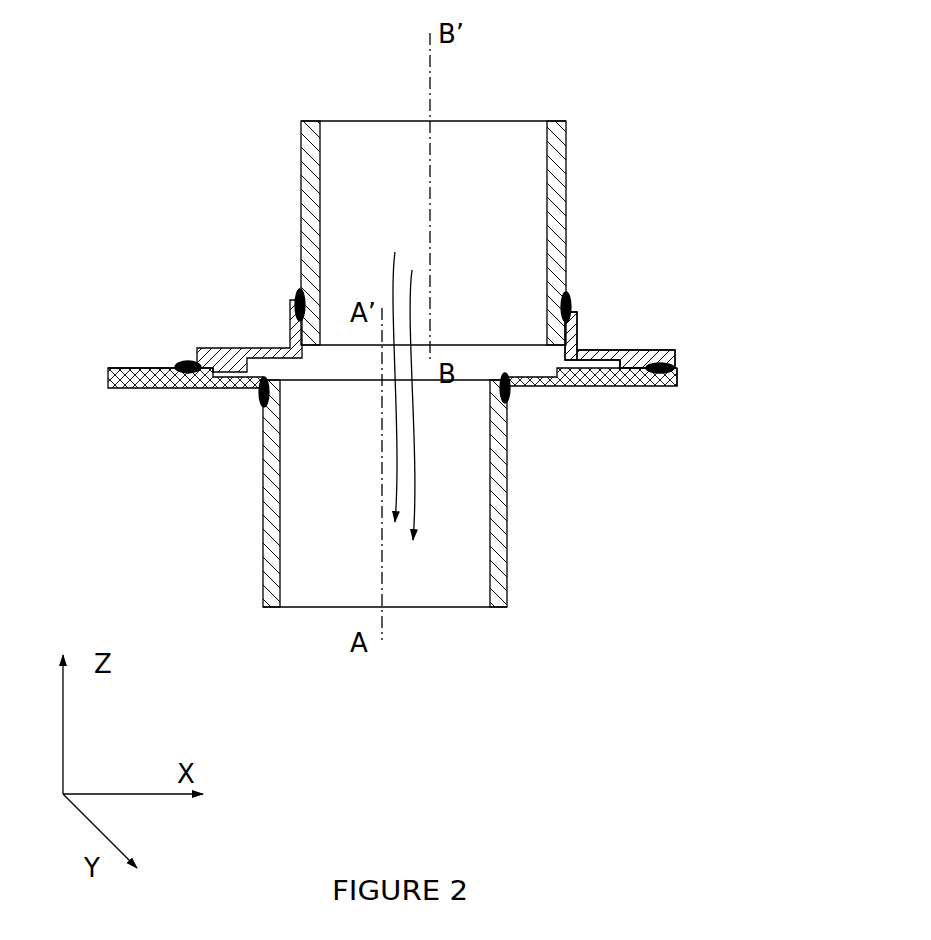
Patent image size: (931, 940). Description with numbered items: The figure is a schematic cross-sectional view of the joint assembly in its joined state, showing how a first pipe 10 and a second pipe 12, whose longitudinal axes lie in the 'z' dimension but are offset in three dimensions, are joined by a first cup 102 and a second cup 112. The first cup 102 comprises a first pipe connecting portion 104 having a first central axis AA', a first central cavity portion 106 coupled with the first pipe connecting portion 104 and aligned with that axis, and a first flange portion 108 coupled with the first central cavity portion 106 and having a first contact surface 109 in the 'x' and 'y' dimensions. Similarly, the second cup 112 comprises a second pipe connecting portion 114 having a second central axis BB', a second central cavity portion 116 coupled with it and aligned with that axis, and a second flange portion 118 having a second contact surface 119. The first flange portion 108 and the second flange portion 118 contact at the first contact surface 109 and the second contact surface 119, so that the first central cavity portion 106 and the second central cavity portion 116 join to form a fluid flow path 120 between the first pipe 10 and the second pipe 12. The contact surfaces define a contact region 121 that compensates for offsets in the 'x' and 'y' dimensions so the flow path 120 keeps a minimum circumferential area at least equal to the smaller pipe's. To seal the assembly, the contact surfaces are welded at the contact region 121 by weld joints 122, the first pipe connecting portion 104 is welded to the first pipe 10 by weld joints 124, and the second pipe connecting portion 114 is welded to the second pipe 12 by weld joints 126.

The first pipe 10 is at (264, 563).
The second pipe 12 is at (563, 133).
The first cup 102 is at (634, 468).
The first pipe connecting portion 104 is at (254, 395).
The first central cavity portion 106 is at (266, 368).
The first flange portion 108 is at (122, 387).
The first contact surface 109 is at (145, 366).
The second cup 112 is at (692, 277).
The second pipe connecting portion 114 is at (574, 306).
The second central cavity portion 116 is at (533, 355).
The second flange portion 118 is at (661, 350).
The second contact surface 119 is at (674, 377).
The fluid flow path 120 is at (421, 513).
The contact region 121 is at (210, 362).
The weld joints 122 is at (191, 362).
The weld joints 124 is at (262, 408).
The weld joints 126 is at (298, 292).